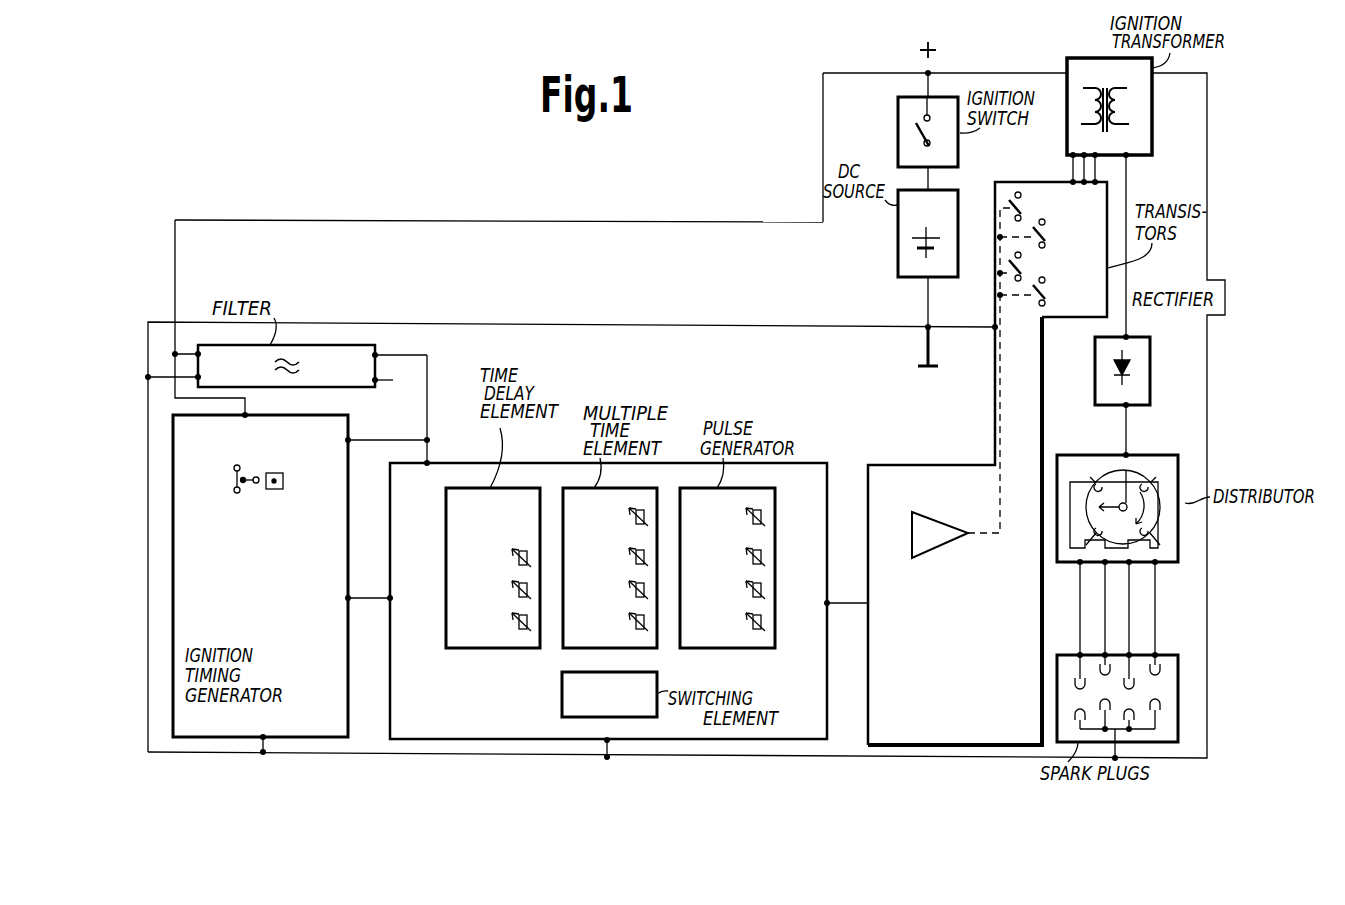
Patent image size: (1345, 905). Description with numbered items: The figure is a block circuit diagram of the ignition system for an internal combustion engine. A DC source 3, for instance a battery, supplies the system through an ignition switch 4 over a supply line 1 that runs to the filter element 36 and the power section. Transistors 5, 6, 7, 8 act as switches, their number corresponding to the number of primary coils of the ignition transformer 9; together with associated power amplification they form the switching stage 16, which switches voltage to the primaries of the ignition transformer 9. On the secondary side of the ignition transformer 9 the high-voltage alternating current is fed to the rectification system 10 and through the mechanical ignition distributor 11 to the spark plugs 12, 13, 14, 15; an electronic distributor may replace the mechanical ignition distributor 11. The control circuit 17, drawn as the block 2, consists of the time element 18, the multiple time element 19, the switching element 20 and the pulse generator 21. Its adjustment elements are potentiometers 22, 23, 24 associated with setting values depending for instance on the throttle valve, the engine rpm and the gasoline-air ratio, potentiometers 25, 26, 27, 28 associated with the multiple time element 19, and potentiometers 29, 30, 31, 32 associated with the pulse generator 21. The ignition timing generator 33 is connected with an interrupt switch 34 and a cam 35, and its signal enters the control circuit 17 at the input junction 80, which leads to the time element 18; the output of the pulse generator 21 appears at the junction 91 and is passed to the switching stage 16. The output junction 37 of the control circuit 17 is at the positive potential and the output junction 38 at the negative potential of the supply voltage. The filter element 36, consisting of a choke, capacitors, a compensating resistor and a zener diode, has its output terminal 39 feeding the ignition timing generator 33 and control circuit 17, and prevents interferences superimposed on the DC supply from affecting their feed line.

The supply line 1 is at (592, 222).
The control circuit 2 is at (530, 757).
The DC source 3 is at (898, 222).
The ignition switch 4 is at (898, 113).
The transistor 5 is at (1023, 210).
The transistor 6 is at (1047, 235).
The transistor 7 is at (1023, 270).
The transistor 8 is at (1047, 293).
The ignition transformer 9 is at (1067, 97).
The rectification system 10 is at (1127, 337).
The mechanical ignition distributor 11 is at (1140, 455).
The spark plug 12 is at (1081, 692).
The spark plug 13 is at (1105, 692).
The spark plug 14 is at (1129, 692).
The spark plug 15 is at (1153, 692).
The switching stage 16 is at (957, 748).
The control circuit 17 is at (527, 463).
The time element 18 is at (483, 589).
The multiple time element 19 is at (630, 587).
The switching element 20 is at (562, 674).
The pulse generator 21 is at (741, 587).
The potentiometer 22 is at (505, 559).
The potentiometer 23 is at (505, 591).
The potentiometer 24 is at (505, 623).
The potentiometer 25 is at (618, 518).
The potentiometer 26 is at (618, 558).
The potentiometer 27 is at (618, 591).
The potentiometer 28 is at (618, 623).
The potentiometer 29 is at (733, 518).
The potentiometer 30 is at (733, 558).
The potentiometer 31 is at (733, 591).
The potentiometer 32 is at (733, 623).
The ignition timing generator 33 is at (255, 740).
The interrupt switch 34 is at (236, 493).
The cam 35 is at (283, 489).
The filter element 36 is at (378, 387).
The output junction 37 is at (438, 462).
The output junction 38 is at (612, 738).
The filter output 39 is at (375, 351).
The input junction 80 is at (392, 601).
The junction 91 is at (830, 606).